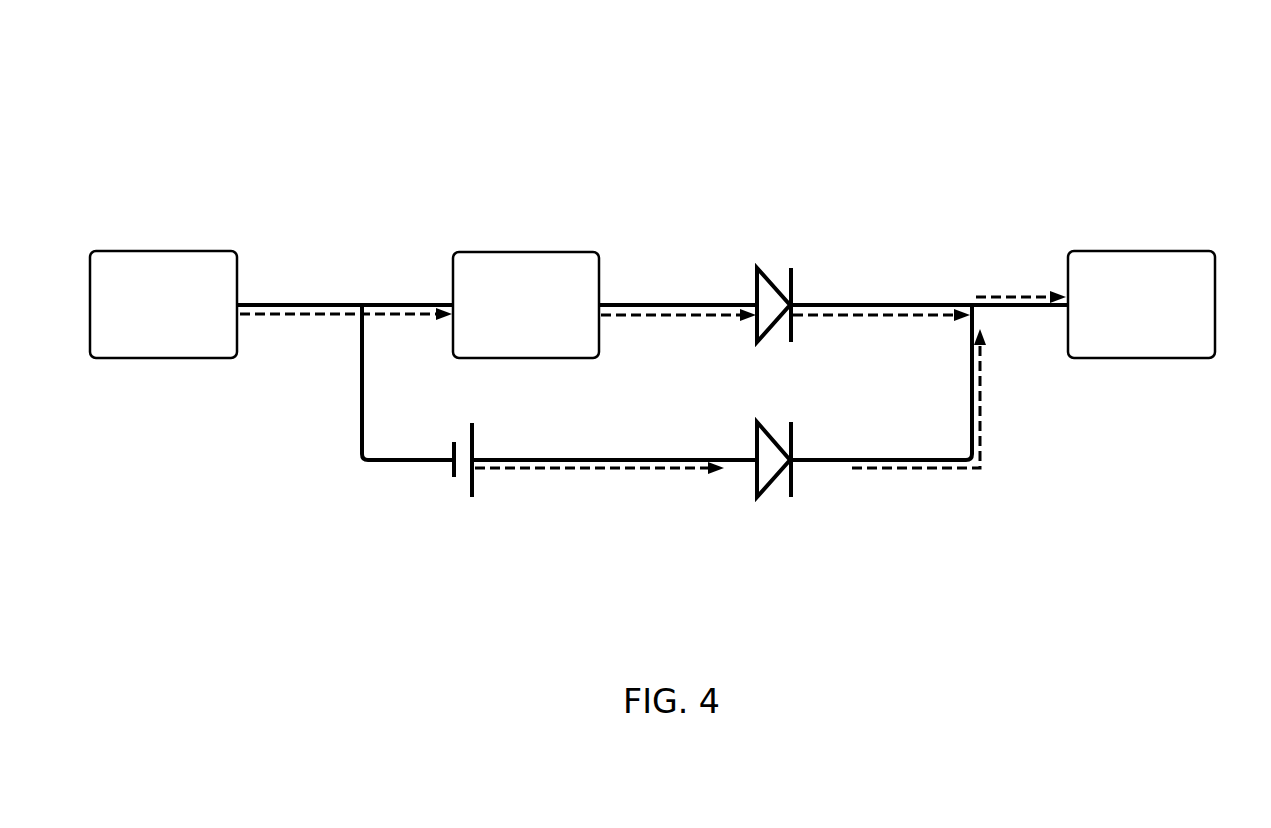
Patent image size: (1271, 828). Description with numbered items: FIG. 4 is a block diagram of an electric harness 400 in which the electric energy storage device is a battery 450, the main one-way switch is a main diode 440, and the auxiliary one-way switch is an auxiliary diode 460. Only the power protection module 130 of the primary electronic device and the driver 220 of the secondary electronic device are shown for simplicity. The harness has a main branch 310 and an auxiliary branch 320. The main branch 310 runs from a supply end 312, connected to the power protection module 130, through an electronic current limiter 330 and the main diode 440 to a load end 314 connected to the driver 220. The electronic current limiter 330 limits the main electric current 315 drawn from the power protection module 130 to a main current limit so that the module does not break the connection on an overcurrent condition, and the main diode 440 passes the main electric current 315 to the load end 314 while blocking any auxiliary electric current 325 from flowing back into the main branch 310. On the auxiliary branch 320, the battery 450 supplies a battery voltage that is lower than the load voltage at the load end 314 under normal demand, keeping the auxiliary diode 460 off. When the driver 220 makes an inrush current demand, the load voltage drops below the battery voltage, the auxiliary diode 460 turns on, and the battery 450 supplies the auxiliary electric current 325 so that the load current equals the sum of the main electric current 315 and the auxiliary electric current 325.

The electric harness 400 is at (714, 110).
The power protection module 130 is at (163, 304).
The electronic current limiter 330 is at (526, 305).
The driver 220 is at (1141, 304).
The supply end 312 is at (304, 303).
The load end 314 is at (973, 293).
The main branch 310 is at (624, 218).
The auxiliary branch 320 is at (626, 548).
The main electric current 315 is at (312, 316).
The auxiliary electric current 325 is at (583, 469).
The main diode 440 is at (758, 268).
The auxiliary diode 460 is at (767, 493).
The battery 450 is at (453, 477).